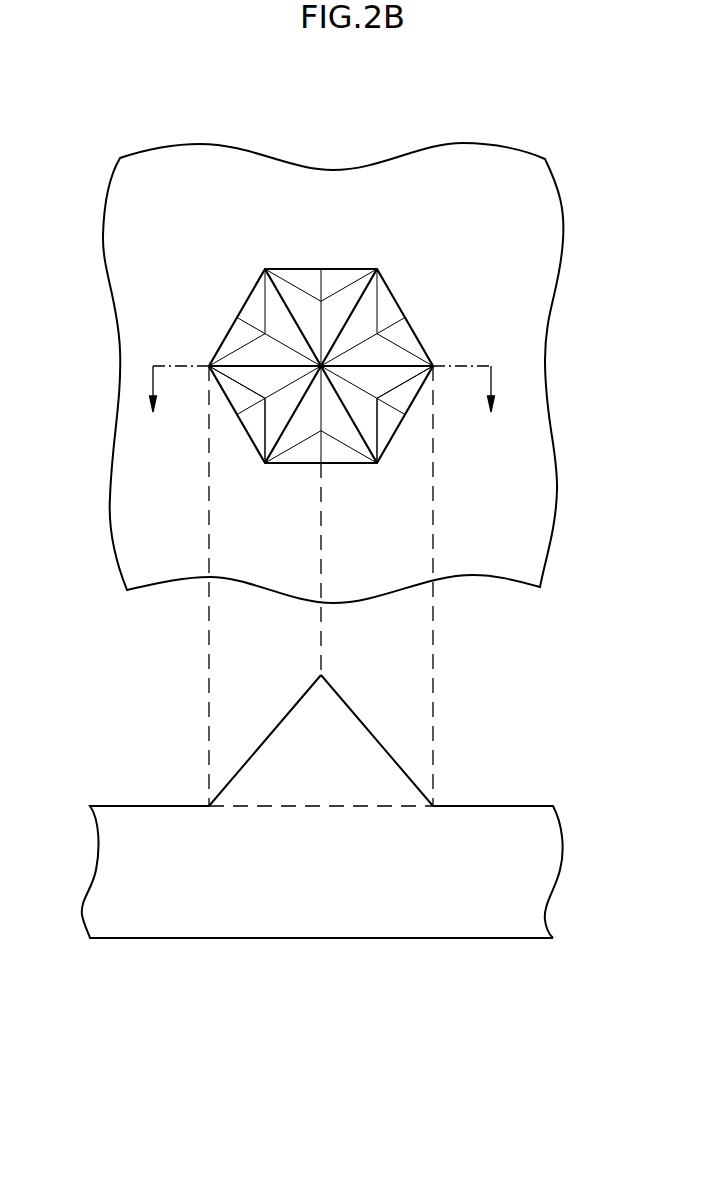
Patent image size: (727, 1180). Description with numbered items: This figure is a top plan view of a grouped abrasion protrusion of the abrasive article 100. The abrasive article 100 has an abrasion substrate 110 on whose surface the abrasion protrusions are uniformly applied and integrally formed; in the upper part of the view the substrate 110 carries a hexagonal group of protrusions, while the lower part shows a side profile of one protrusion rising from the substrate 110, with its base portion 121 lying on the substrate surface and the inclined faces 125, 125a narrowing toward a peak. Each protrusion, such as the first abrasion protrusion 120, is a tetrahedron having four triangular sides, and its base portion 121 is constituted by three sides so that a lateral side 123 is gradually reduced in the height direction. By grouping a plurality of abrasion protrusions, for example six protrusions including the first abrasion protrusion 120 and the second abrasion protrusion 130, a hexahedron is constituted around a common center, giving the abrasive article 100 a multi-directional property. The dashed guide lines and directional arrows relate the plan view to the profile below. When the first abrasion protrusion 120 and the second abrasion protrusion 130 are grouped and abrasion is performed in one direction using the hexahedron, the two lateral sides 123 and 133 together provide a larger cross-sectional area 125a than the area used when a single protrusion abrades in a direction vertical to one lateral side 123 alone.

The abrasive article 100 is at (352, 118).
The abrasion substrate 110 is at (138, 527).
The abrasion protrusion 120 is at (273, 307).
The base portion 121 is at (347, 808).
The lateral side 123 is at (262, 380).
The first side surface 125 is at (270, 755).
The cross-sectional area 125a is at (373, 753).
The second abrasion protrusion 130 is at (325, 283).
The lateral side 133 is at (380, 385).